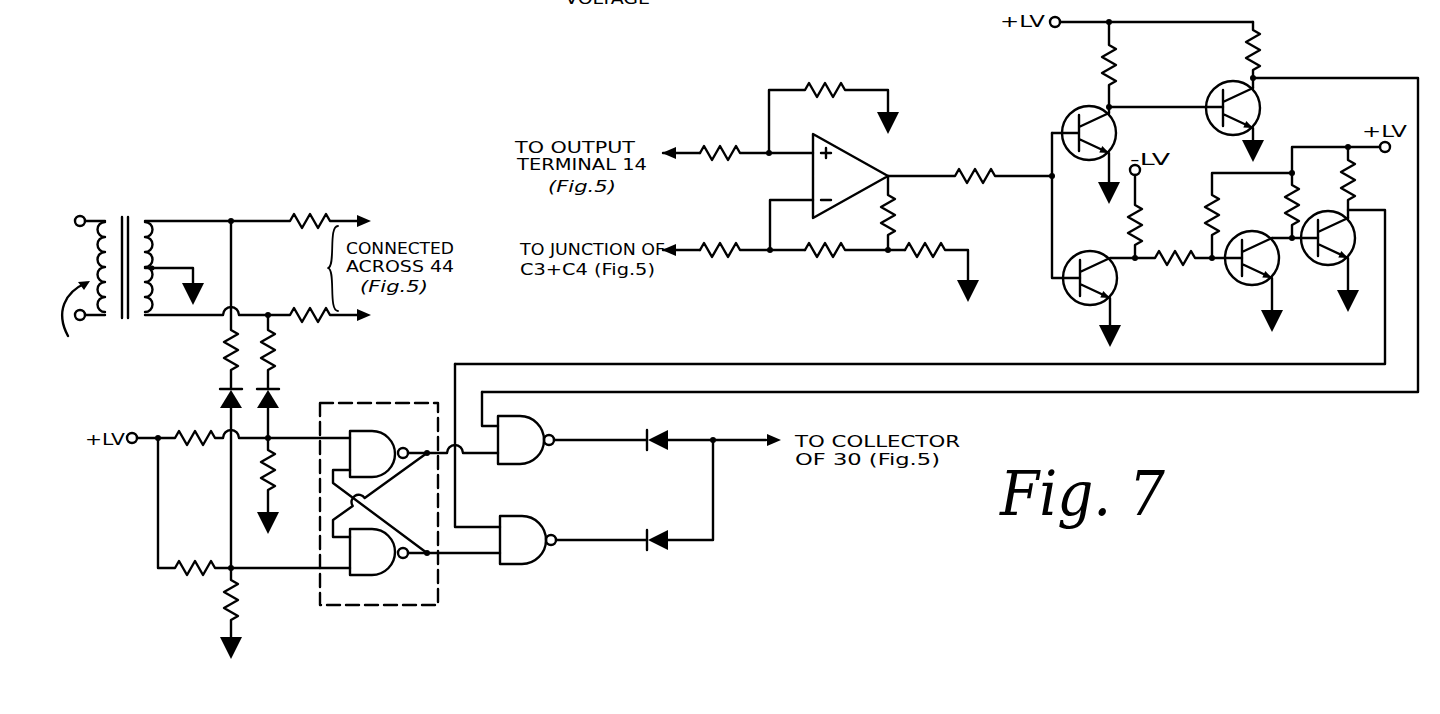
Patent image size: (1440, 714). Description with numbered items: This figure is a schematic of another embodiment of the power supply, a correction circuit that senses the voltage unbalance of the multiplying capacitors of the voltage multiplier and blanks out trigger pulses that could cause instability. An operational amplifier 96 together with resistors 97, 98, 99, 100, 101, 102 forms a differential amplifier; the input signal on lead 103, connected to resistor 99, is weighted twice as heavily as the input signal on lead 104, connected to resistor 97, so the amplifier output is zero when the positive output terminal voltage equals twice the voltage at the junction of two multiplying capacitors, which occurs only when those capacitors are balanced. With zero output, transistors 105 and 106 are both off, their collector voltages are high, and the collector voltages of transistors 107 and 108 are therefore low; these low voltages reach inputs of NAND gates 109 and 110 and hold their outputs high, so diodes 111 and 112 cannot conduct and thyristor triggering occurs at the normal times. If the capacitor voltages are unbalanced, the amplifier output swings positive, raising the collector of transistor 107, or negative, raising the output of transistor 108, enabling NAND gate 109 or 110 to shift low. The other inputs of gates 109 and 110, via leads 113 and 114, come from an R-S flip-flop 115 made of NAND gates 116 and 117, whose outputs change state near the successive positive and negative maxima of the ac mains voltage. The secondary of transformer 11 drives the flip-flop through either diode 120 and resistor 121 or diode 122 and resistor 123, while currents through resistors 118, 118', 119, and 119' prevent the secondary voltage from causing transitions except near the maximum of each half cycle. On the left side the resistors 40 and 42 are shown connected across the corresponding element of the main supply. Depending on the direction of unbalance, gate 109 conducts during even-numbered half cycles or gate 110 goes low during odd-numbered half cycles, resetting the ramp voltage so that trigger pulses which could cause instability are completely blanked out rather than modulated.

The transformer 11 is at (127, 214).
The resistor 40 is at (313, 210).
The resistor 42 is at (310, 311).
The operational amplifier 96 is at (860, 123).
The resistor 97 is at (732, 134).
The resistor 98 is at (824, 82).
The resistor 99 is at (737, 236).
The resistor 100 is at (823, 257).
The resistor 101 is at (936, 259).
The resistor 102 is at (898, 202).
The lead 103 is at (688, 252).
The lead 104 is at (691, 156).
The transistor 105 is at (1074, 112).
The transistor 106 is at (1070, 302).
The transistor 107 is at (1222, 90).
The transistor 108 is at (1312, 266).
The NAND gate 109 is at (539, 422).
The NAND gate 110 is at (533, 518).
The diode 111 is at (656, 434).
The diode 112 is at (656, 548).
The lead 113 is at (466, 456).
The lead 114 is at (454, 558).
The R-S flip-flop 115 is at (402, 400).
The NAND gate 116 is at (383, 438).
The NAND gate 117 is at (383, 575).
The resistor 118 is at (243, 451).
The resistor 118' is at (289, 486).
The resistor 119 is at (254, 506).
The resistor 119' is at (252, 613).
The diode 120 is at (216, 402).
The resistor 121 is at (228, 354).
The diode 122 is at (276, 396).
The resistor 123 is at (278, 344).